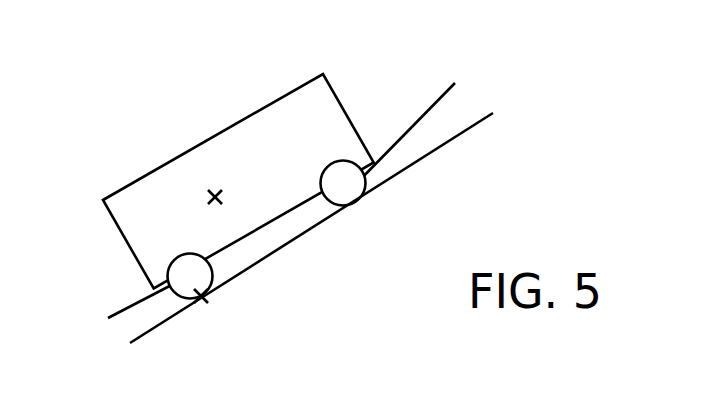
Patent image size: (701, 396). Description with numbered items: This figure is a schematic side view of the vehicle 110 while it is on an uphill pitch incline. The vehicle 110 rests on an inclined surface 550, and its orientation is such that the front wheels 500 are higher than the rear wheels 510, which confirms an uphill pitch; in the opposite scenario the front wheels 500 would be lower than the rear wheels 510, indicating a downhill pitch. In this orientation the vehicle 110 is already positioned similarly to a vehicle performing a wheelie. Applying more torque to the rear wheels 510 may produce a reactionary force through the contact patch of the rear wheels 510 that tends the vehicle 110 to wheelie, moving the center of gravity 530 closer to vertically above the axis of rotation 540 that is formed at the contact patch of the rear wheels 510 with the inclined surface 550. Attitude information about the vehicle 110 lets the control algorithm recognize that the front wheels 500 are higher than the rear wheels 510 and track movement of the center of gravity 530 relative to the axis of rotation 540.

The vehicle 110 is at (281, 191).
The front wheels 500 is at (455, 83).
The rear wheels 510 is at (108, 318).
The center of gravity 530 is at (160, 175).
The axis of rotation 540 is at (242, 311).
The inclined surface 550 is at (338, 228).